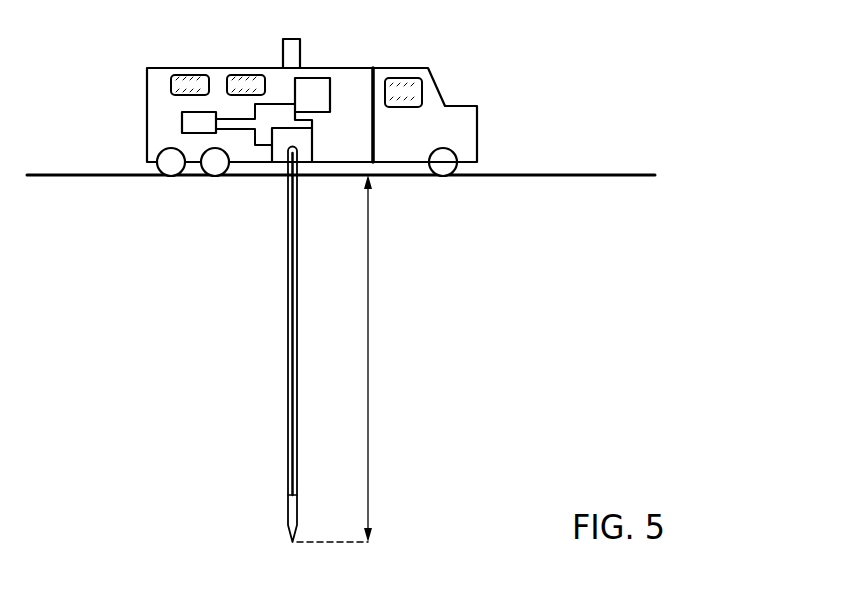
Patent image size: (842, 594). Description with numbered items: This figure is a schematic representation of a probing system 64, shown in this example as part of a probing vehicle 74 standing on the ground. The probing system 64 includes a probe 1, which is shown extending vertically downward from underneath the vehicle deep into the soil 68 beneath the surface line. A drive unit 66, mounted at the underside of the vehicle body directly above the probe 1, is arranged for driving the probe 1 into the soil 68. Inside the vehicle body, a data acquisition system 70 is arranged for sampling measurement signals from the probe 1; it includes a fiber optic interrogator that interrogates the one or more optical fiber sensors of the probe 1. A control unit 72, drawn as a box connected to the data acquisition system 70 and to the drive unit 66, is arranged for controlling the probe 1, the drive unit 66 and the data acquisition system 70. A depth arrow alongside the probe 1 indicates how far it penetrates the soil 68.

The probe 1 is at (288, 512).
The probing system 64 is at (603, 90).
The drive unit 66 is at (278, 150).
The soil 68 is at (499, 243).
The data acquisition system 70 is at (182, 122).
The control unit 72 is at (322, 68).
The probing vehicle 74 is at (437, 83).